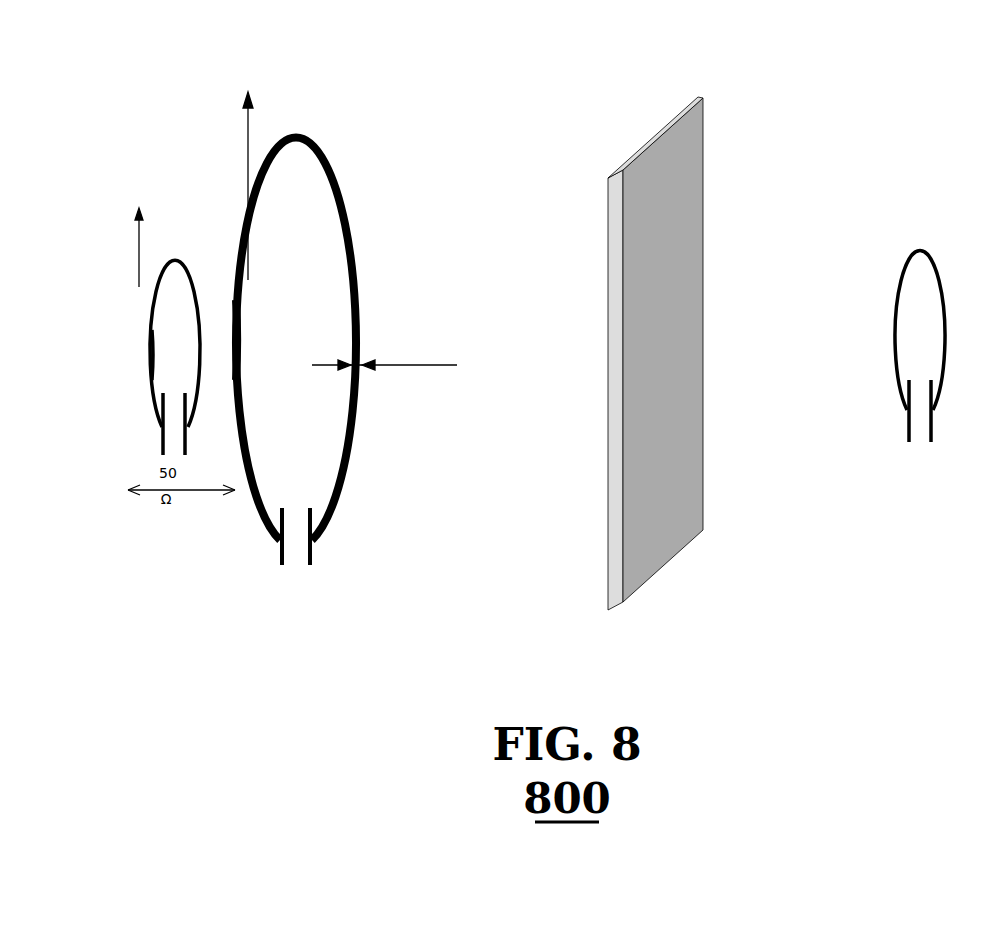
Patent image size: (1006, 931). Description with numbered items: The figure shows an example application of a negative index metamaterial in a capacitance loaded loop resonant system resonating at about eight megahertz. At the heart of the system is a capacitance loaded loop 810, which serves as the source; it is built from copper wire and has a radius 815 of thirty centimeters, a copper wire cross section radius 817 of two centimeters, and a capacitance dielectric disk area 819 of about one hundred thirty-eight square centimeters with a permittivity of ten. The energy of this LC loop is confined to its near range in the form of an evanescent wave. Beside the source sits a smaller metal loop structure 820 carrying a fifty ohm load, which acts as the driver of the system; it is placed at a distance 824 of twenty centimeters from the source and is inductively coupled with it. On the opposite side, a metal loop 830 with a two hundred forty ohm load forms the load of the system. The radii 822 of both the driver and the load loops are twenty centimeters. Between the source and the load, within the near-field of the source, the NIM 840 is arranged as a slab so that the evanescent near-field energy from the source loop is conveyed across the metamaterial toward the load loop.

The capacitance loaded loop 810 is at (332, 170).
The radius 815 is at (297, 252).
The copper wire cross section radius 817 is at (413, 365).
The capacitance dielectric disk area 819 is at (292, 550).
The metal loop structure 820 is at (165, 280).
The radii 822 is at (173, 323).
The distance 824 is at (182, 592).
The metal loop 830 is at (940, 308).
The NIM 840 is at (705, 110).